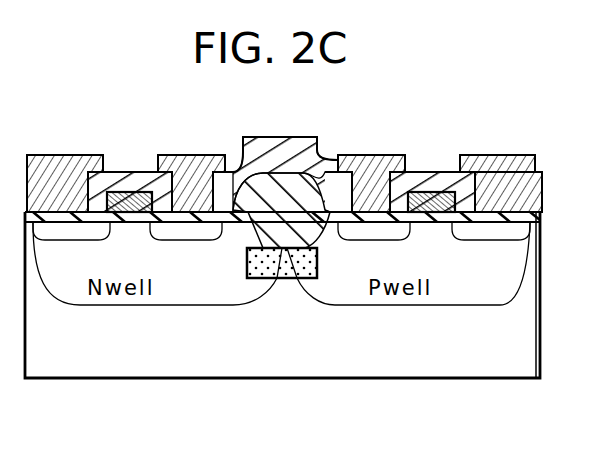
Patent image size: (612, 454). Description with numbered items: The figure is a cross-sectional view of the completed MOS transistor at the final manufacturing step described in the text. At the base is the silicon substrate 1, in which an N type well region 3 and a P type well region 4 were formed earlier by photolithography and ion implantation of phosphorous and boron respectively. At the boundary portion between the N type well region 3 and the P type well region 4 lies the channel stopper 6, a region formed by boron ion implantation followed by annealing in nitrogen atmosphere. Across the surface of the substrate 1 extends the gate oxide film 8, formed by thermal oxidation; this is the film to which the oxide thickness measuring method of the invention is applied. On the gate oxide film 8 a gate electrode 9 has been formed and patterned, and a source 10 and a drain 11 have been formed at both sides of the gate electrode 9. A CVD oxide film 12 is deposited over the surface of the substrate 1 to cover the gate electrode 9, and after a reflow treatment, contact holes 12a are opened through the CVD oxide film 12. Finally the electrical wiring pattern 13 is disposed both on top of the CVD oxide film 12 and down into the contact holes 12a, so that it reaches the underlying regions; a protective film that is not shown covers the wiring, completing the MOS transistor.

The silicon substrate 1 is at (530, 353).
The N type well region 3 is at (232, 300).
The P type well region 4 is at (460, 300).
The channel stopper 6 is at (308, 278).
The gate oxide film 8 is at (542, 218).
The gate electrode 9 is at (437, 190).
The source 10 is at (360, 237).
The drain 11 is at (495, 233).
The CVD oxide film 12 is at (514, 165).
The contact holes 12a is at (480, 162).
The electrical wiring pattern 13 is at (367, 157).